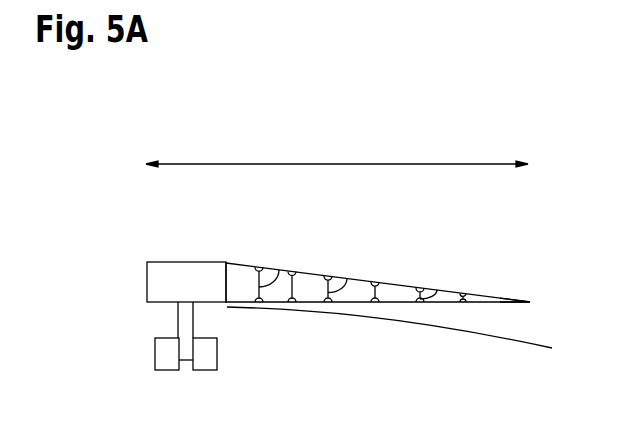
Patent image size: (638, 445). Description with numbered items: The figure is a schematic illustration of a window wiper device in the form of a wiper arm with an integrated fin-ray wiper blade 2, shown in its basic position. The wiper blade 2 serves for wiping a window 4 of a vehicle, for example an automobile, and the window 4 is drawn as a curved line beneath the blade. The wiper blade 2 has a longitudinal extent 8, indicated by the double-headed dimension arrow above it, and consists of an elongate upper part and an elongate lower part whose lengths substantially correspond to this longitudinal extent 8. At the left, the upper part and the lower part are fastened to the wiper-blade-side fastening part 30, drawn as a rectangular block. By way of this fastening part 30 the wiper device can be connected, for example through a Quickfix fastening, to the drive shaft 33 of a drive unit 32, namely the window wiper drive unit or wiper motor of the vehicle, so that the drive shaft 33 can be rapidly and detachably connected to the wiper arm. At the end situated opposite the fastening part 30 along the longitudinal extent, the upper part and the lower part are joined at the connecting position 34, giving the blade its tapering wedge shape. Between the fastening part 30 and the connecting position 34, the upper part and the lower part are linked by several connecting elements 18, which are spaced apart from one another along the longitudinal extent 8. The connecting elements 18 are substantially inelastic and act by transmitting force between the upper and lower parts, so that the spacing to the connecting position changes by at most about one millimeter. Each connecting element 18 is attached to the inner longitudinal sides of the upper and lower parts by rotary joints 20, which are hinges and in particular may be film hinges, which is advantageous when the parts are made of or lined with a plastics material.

The wiper blade 2 is at (406, 229).
The window 4 is at (510, 341).
The longitudinal extent 8 is at (324, 163).
The connecting elements 18 is at (280, 269).
The rotary joints 20 is at (260, 266).
The wiper-blade-side fastening part 30 is at (155, 283).
The drive unit 32 is at (160, 359).
The drive shaft 33 is at (178, 314).
The connecting position 34 is at (530, 300).